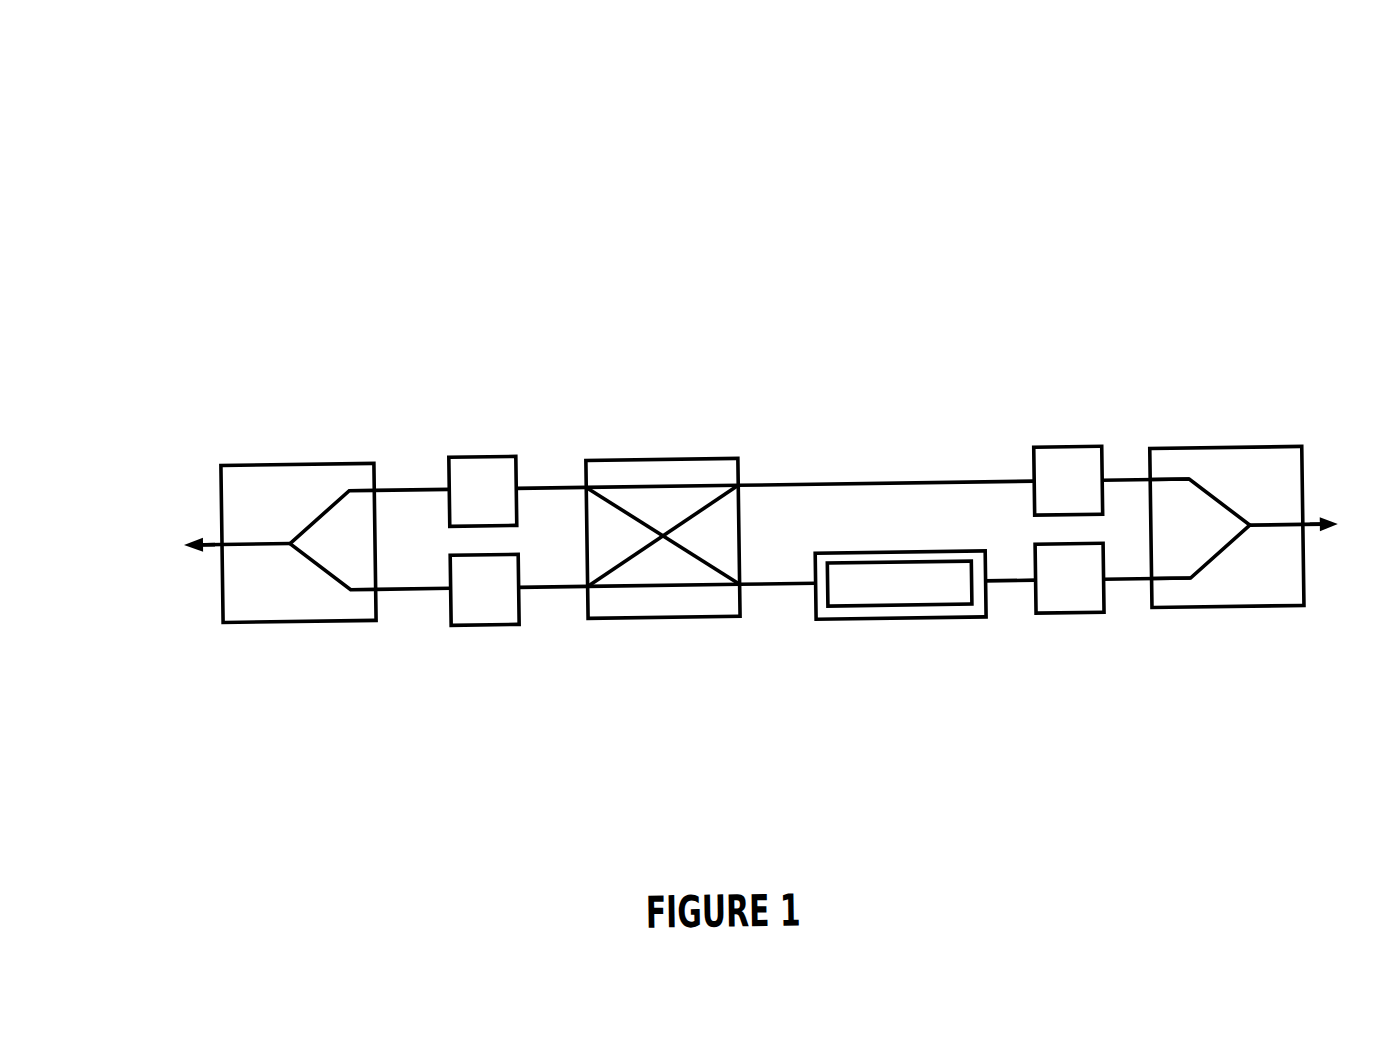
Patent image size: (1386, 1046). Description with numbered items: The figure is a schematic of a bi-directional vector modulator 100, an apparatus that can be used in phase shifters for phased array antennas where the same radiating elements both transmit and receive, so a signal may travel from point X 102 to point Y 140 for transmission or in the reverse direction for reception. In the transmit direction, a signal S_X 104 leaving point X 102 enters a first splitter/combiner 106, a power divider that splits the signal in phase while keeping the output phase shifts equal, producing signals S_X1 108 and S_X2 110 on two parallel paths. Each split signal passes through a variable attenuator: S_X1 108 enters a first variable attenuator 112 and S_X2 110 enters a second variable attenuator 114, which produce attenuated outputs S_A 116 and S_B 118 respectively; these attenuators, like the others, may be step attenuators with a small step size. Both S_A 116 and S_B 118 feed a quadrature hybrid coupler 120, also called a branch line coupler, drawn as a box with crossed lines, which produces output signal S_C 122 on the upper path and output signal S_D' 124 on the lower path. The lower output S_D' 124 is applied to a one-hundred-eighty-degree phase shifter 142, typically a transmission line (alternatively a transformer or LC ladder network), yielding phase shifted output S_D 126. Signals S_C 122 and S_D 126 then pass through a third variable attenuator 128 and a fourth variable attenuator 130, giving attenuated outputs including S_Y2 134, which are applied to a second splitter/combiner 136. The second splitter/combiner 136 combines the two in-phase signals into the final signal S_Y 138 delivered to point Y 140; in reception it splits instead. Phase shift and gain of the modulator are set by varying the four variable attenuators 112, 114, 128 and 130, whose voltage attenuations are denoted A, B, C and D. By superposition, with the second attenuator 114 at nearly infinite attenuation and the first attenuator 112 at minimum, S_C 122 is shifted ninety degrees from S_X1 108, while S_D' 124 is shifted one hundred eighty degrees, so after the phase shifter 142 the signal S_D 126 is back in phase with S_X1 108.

The bi-directional vector modulator 100 is at (388, 236).
The point X 102 is at (187, 560).
The signal S_X 104 is at (213, 534).
The first splitter/combiner PD1 106 is at (340, 616).
The signal S_X1 108 is at (426, 481).
The signal S_X2 110 is at (437, 587).
The variable attenuator VA1 112 is at (503, 416).
The variable attenuator VA2 114 is at (517, 621).
The signal S_A 116 is at (569, 481).
The signal S_B 118 is at (577, 586).
The quadrature hybrid coupler 120 is at (660, 616).
The signal S_C 122 is at (800, 484).
The signal S_D' 124 is at (801, 584).
The signal S_D 126 is at (1036, 586).
The variable attenuator VA3 128 is at (1077, 451).
The variable attenuator VA4 130 is at (1086, 617).
The signal S_Y2 134 is at (1131, 485).
The second splitter/combiner PD2 136 is at (1262, 614).
The signal S_Y 138 is at (1311, 534).
The point Y 140 is at (1338, 534).
The 180 degree phase shifter 142 is at (956, 620).